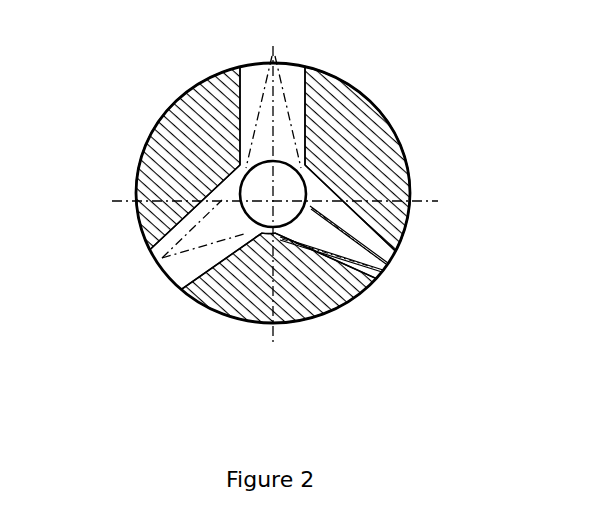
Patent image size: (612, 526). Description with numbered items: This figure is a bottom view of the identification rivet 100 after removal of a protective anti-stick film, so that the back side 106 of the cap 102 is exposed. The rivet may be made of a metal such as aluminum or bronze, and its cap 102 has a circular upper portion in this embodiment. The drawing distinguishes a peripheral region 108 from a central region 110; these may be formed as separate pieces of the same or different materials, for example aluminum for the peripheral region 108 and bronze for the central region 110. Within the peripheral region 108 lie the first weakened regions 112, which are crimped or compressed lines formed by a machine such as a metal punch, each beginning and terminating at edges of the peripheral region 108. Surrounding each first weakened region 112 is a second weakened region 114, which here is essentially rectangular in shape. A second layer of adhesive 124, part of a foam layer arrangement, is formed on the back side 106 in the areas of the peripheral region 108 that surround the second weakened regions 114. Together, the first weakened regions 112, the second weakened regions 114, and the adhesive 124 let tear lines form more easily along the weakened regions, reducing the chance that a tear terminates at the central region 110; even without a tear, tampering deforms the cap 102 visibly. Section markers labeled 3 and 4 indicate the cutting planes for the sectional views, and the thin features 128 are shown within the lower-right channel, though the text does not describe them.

The identification rivet 100 is at (65, 41).
The cap 102 is at (373, 104).
The back side 106 is at (388, 166).
The peripheral region 108 is at (175, 132).
The central region 110 is at (203, 298).
The first weakened region 112 is at (277, 61).
The second weakened region 114 is at (293, 70).
The second layer of adhesive 124 is at (335, 311).
The thin ribs 128 is at (345, 255).
The section line 3-3' 3 is at (278, 203).
The section line 4-4' 4 is at (272, 198).